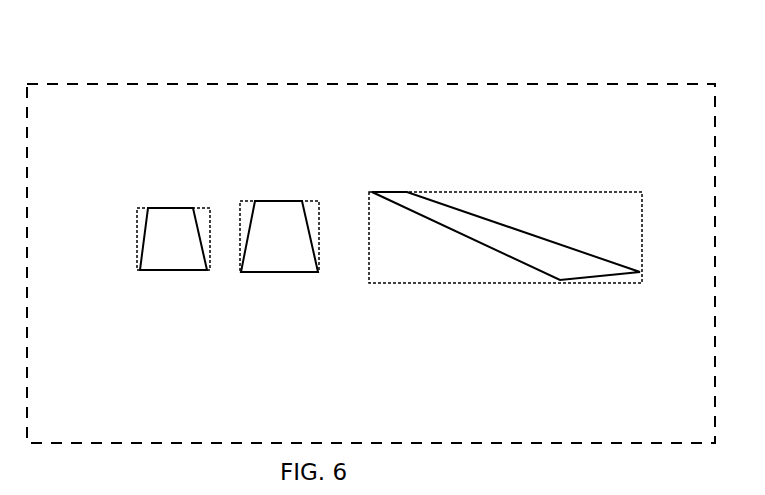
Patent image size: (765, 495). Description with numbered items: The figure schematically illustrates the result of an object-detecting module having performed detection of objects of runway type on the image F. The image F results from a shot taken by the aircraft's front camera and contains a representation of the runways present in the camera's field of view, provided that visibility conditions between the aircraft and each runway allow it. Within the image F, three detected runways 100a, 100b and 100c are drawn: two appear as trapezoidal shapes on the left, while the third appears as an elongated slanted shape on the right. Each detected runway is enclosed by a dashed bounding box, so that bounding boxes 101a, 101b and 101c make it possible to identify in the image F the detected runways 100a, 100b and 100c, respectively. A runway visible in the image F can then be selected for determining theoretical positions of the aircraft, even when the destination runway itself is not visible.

The image F is at (553, 83).
The detected runway 100a is at (167, 218).
The detected runway 100b is at (282, 216).
The detected runway 100c is at (528, 257).
The bounding box 101a is at (137, 243).
The bounding box 101b is at (318, 253).
The bounding box 101c is at (475, 284).